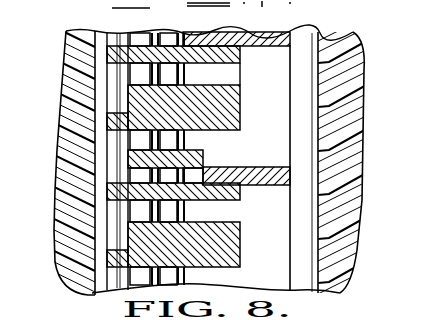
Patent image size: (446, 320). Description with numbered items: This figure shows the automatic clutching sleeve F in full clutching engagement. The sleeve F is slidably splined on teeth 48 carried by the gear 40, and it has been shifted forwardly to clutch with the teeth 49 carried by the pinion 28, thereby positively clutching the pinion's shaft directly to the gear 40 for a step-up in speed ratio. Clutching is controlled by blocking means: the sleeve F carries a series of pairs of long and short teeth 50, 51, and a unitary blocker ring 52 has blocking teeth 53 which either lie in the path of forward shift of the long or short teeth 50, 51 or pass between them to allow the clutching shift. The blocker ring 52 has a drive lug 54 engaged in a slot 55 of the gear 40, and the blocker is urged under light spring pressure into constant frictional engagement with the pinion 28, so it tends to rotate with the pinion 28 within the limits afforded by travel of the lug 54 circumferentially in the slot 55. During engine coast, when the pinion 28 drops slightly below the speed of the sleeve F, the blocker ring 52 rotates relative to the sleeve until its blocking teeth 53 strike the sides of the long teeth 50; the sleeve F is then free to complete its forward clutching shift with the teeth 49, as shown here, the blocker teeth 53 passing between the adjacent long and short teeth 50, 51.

The gear 40 is at (350, 243).
The short teeth 51 is at (107, 88).
The blocking teeth 53 is at (176, 74).
The blocker ring 52 is at (167, 30).
The long teeth 50 is at (110, 51).
The teeth 49 is at (248, 100).
The automatic clutching sleeve F is at (194, 96).
The slot 55 is at (214, 170).
The drive lug 54 is at (208, 168).
The teeth 48 is at (252, 180).
The pinion 28 is at (66, 224).